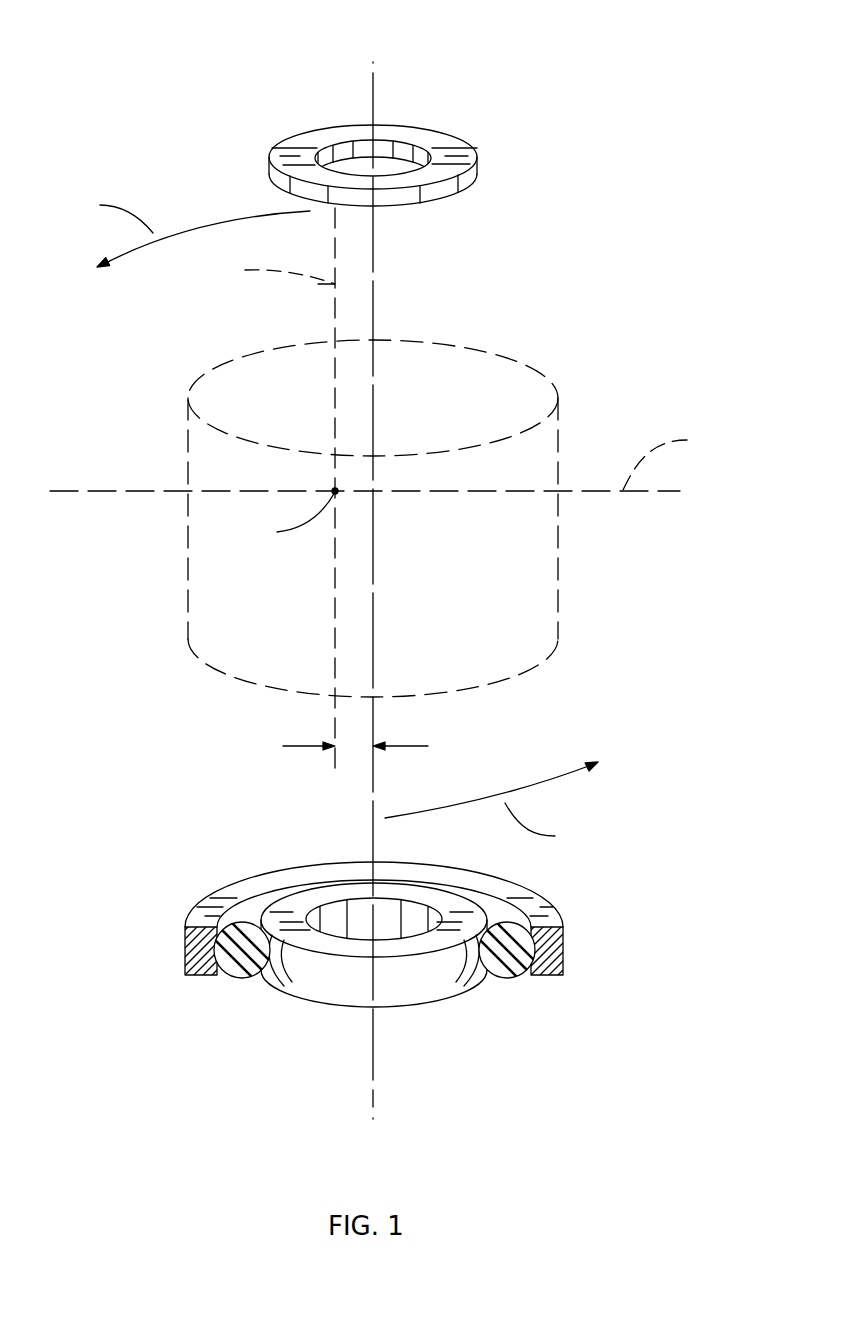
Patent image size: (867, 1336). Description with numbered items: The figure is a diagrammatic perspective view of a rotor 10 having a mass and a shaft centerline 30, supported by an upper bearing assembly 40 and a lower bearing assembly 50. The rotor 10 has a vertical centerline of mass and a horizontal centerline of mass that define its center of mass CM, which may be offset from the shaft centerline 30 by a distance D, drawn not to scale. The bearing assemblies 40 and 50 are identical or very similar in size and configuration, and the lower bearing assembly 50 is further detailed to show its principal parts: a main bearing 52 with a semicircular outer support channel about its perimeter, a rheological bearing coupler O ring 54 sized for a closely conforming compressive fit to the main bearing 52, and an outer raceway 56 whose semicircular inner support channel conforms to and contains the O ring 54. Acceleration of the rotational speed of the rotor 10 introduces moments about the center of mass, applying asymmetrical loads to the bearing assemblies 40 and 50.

The rotor 10 is at (176, 23).
The shaft centerline 30 is at (373, 257).
The upper bearing assembly 40 is at (412, 133).
The lower bearing assembly 50 is at (158, 887).
The main bearing 52 is at (343, 993).
The rheological bearing coupler O ring 54 is at (507, 978).
The outer raceway 56 is at (563, 940).